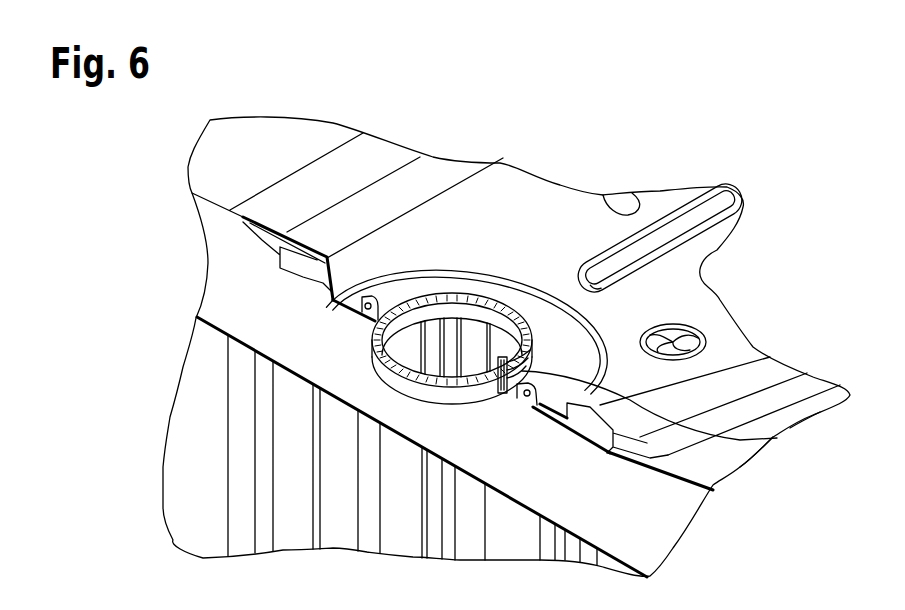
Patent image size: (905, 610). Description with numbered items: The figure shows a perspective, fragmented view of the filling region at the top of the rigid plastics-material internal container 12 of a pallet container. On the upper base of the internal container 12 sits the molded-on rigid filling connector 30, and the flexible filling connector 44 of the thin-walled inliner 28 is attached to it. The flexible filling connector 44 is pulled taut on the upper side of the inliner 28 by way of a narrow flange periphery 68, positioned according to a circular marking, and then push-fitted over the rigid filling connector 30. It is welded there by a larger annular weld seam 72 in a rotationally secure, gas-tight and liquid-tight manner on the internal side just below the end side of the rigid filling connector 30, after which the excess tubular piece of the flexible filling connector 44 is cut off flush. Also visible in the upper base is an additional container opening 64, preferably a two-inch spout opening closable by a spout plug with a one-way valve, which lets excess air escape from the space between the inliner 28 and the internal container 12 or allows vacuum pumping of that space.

The plastics-material internal container 12 is at (533, 207).
The flexible inliner 28 is at (594, 500).
The filling connector 30 is at (771, 439).
The filling connector 44 is at (461, 313).
The container opening 64 is at (683, 323).
The flange periphery 68 is at (473, 402).
The annular weld seam 72 is at (427, 300).